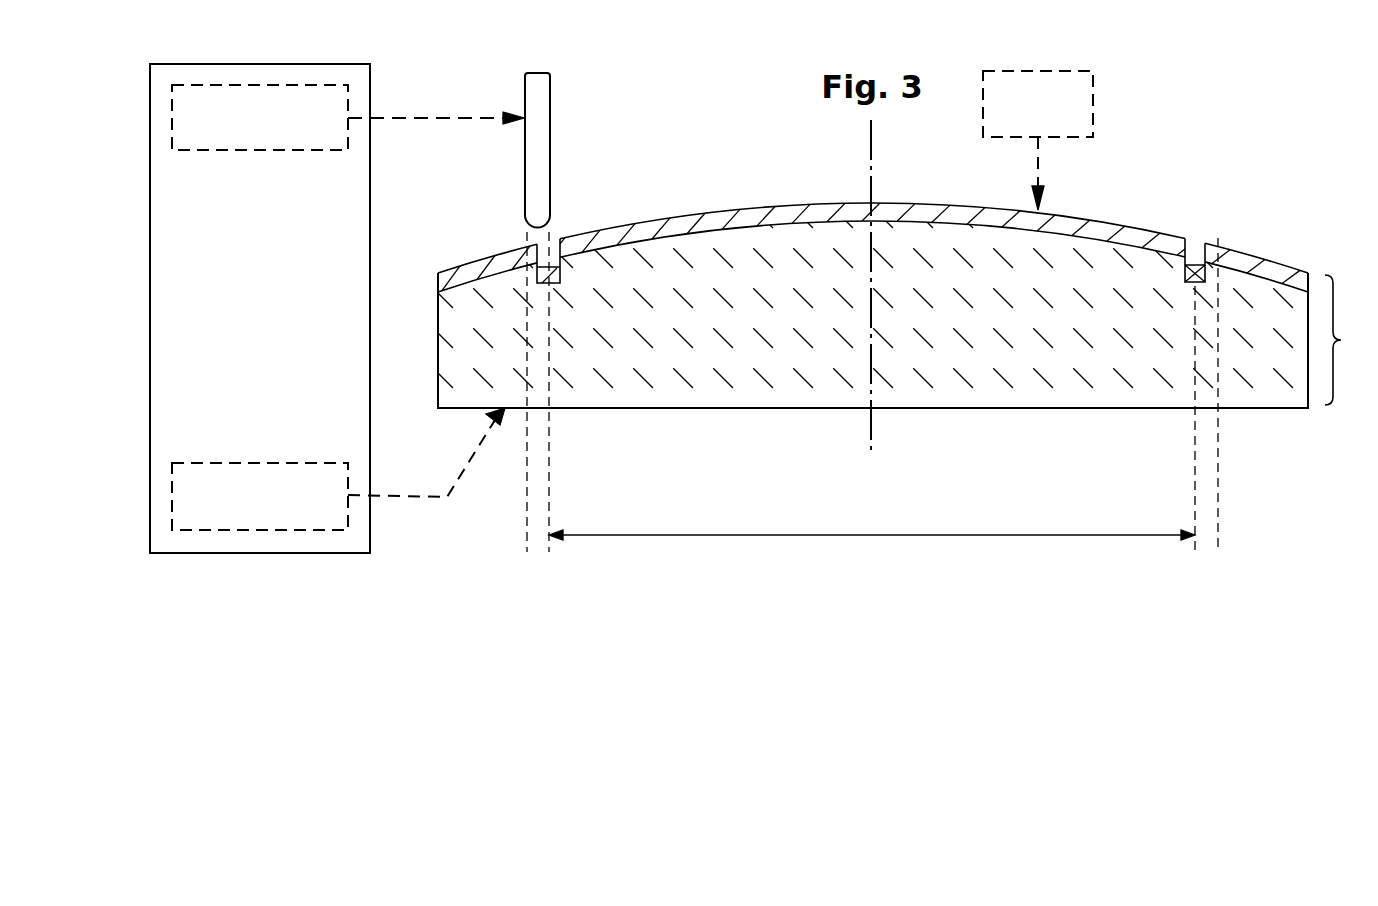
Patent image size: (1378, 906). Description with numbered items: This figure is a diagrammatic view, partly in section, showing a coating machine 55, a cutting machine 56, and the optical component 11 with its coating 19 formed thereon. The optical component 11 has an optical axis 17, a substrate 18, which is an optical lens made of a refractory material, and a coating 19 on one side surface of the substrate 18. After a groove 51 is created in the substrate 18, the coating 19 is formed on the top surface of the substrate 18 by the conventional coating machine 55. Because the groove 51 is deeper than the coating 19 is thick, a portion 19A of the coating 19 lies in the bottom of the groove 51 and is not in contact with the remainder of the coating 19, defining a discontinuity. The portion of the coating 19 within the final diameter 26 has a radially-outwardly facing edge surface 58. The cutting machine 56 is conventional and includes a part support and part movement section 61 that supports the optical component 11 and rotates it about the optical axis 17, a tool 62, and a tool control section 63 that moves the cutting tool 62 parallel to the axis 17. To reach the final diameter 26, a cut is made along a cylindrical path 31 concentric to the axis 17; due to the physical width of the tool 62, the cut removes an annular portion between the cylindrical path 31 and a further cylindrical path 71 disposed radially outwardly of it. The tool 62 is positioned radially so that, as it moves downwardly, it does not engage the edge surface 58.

The optical component 11 is at (1348, 340).
The optical axis 17 is at (873, 430).
The substrate 18 is at (1021, 336).
The coating 19 is at (1262, 268).
The portion of the coating 19A is at (550, 266).
The final diameter 26 is at (998, 537).
The cylindrical path 31 is at (550, 480).
The groove 51 is at (1193, 262).
The coating machine 55 is at (1068, 71).
The cutting machine 56 is at (248, 343).
The edge surface 58 is at (1190, 264).
The part support and part movement section 61 is at (238, 463).
The tool 62 is at (550, 100).
The tool control section 63 is at (237, 152).
The further cylindrical path 71 is at (527, 510).